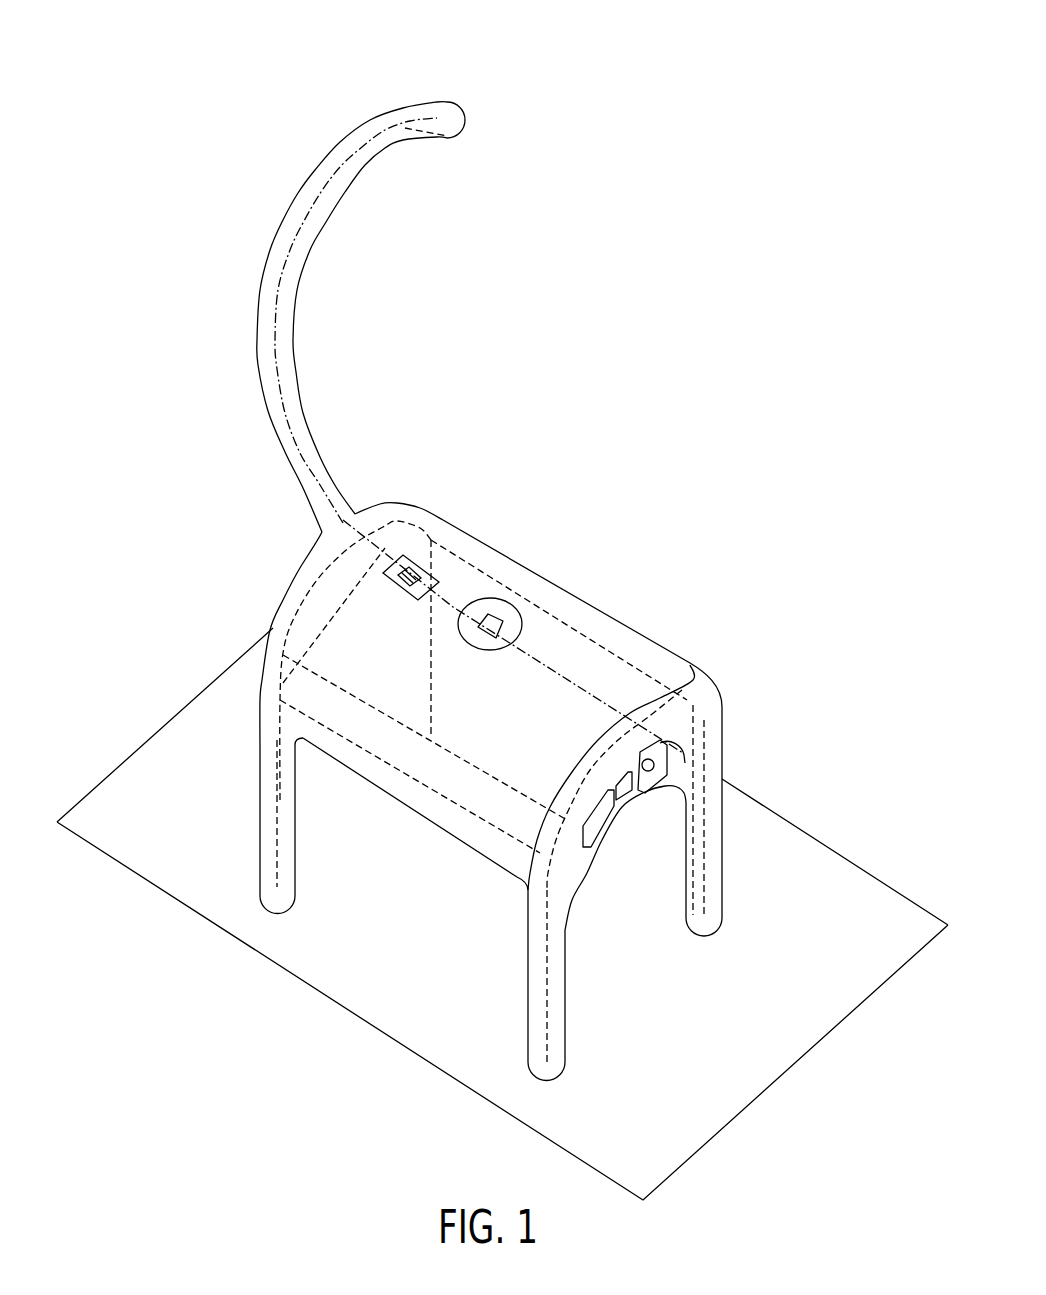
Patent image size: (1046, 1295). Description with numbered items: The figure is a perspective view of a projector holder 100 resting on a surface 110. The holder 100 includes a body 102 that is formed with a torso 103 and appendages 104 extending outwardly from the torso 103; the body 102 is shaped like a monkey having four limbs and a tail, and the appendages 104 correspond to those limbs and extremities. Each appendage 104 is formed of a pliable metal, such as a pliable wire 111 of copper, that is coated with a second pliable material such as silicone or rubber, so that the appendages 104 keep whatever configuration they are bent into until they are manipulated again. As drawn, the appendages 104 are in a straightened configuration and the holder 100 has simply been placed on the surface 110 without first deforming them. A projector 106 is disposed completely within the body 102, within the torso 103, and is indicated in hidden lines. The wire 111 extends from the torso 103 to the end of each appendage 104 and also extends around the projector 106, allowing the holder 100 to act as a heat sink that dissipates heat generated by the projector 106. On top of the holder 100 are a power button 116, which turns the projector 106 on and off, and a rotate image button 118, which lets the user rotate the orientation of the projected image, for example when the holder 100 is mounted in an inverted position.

The projector holder 100 is at (249, 100).
The body 102 is at (543, 578).
The torso 103 is at (302, 597).
The appendages 104 is at (440, 108).
The projector 106 is at (613, 653).
The surface 110 is at (125, 797).
The pliable wire 111 is at (432, 136).
The power button 116 is at (498, 607).
The rotate image button 118 is at (407, 560).